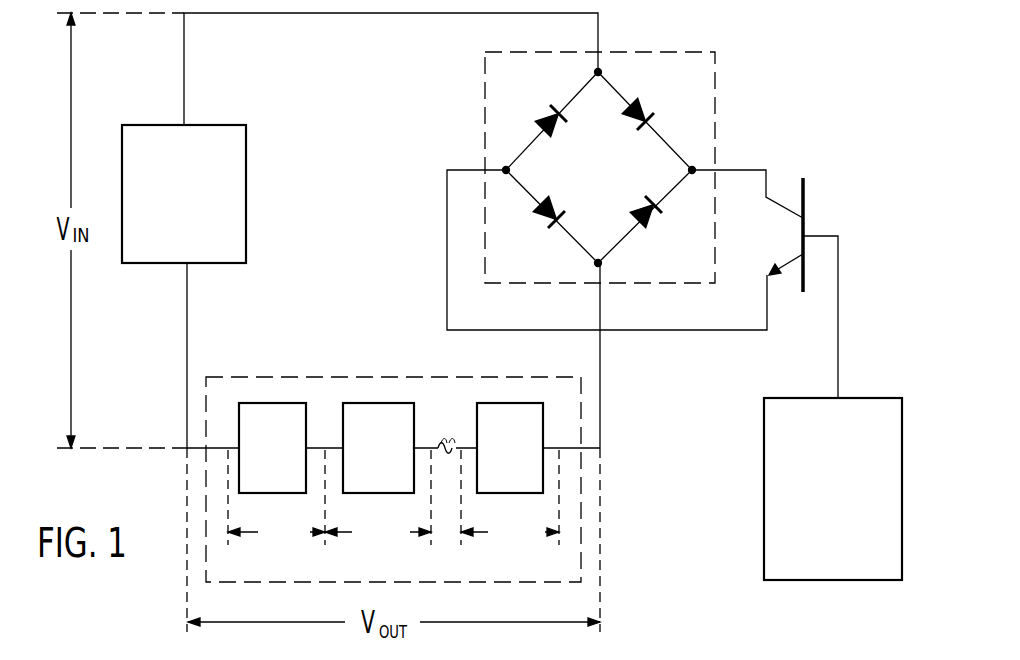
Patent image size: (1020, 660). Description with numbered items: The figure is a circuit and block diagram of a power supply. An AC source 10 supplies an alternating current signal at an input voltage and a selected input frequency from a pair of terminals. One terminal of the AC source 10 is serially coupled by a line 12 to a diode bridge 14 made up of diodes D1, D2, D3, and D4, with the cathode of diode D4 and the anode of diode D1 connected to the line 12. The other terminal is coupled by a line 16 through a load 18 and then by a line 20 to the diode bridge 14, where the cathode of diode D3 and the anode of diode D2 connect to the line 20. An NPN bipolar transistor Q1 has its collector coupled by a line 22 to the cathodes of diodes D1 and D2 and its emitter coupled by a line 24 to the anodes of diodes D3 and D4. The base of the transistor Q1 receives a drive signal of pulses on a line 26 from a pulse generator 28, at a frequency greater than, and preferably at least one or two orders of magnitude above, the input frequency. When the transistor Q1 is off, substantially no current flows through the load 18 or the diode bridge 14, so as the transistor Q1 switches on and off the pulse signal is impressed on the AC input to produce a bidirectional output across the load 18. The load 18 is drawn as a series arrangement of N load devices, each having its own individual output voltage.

The AC source 10 is at (184, 194).
The line 12 is at (185, 62).
The diode bridge 14 is at (679, 52).
The line 16 is at (188, 306).
The load 18 is at (403, 376).
The line 20 is at (603, 362).
The line 22 is at (751, 169).
The line 24 is at (711, 331).
The line 26 is at (840, 287).
The pulse generator 28 is at (833, 489).
The diode D1 is at (646, 108).
The diode D2 is at (646, 227).
The diode D3 is at (547, 217).
The diode D4 is at (545, 110).
The NPN bipolar transistor Q1 is at (781, 235).